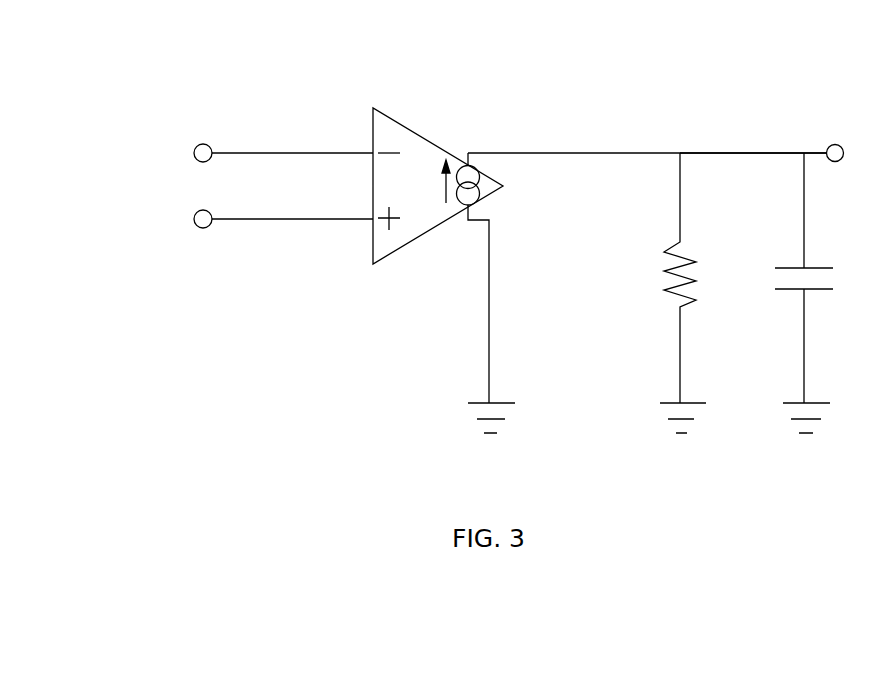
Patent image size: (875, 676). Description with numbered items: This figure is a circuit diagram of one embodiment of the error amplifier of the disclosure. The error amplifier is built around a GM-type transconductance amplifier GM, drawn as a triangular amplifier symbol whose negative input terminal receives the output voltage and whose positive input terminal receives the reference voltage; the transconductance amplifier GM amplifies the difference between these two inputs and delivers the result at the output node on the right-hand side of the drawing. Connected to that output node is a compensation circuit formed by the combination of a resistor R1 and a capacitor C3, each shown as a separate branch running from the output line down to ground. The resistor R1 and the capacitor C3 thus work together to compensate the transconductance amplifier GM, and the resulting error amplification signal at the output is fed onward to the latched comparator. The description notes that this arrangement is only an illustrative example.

The GM-type transconductance amplifier GM is at (465, 167).
The resistor R1 is at (666, 293).
The capacitor C3 is at (785, 293).